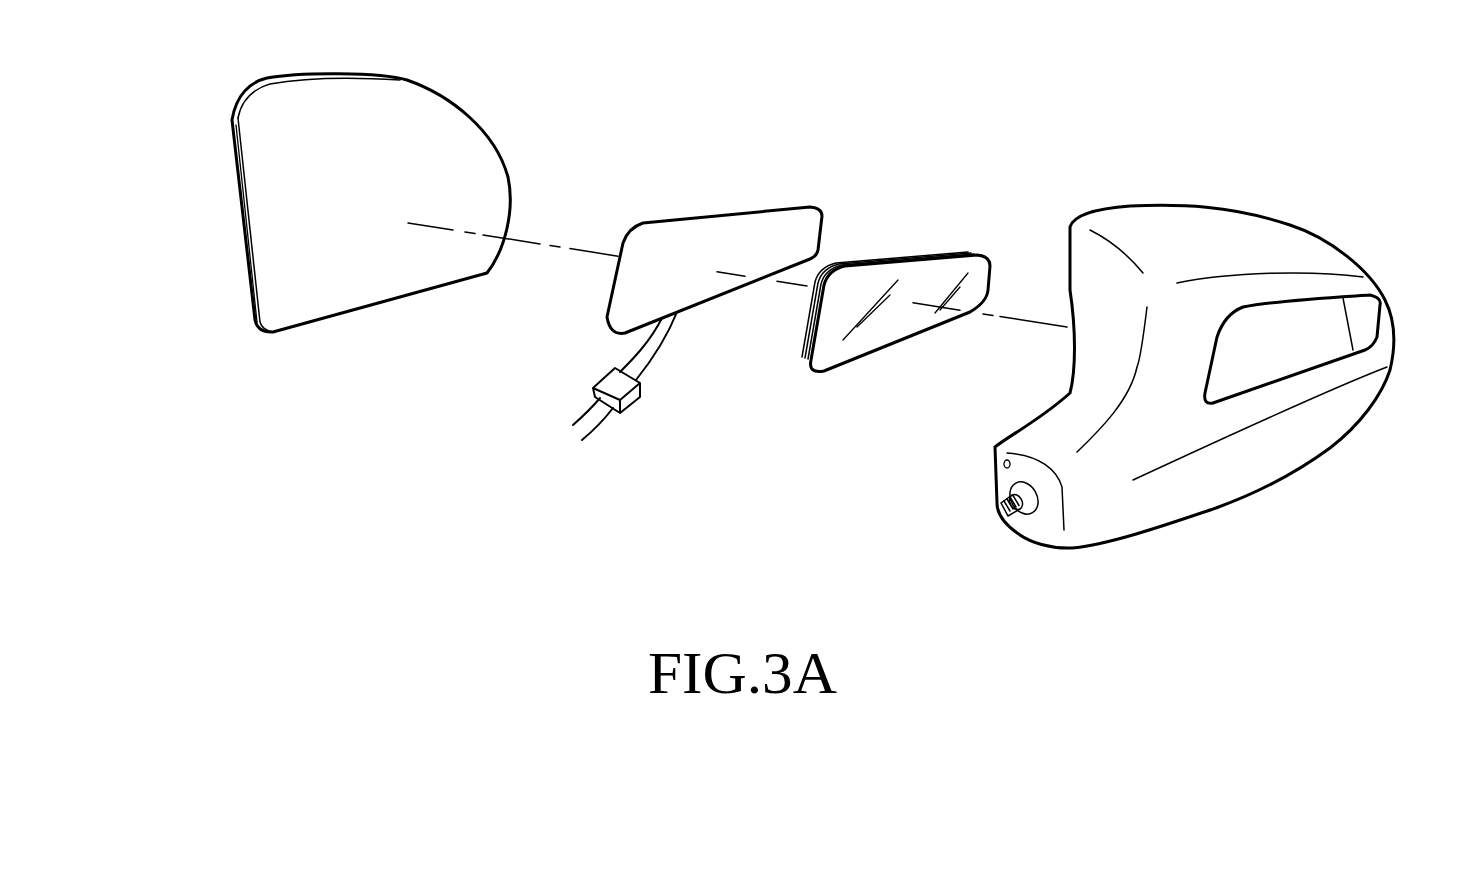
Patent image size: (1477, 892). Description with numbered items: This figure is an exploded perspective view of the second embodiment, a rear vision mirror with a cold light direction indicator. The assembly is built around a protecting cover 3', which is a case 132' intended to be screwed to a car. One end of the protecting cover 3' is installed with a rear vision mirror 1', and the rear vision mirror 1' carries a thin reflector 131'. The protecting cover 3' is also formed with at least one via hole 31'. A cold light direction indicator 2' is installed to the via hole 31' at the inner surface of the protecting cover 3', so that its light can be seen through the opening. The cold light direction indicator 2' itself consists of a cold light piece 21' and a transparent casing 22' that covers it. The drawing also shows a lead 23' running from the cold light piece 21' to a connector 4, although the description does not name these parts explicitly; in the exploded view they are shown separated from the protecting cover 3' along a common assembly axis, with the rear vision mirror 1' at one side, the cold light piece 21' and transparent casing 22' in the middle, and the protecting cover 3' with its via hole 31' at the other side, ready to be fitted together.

The rear vision mirror 1' is at (371, 175).
The thin reflector 131' is at (188, 223).
The cold light direction indicator 2' is at (803, 272).
The cold light piece 21' is at (714, 281).
The transparent casing 22' is at (901, 319).
The cable 23' is at (681, 360).
The connector 4 is at (600, 382).
The protecting cover 3' is at (1194, 340).
The via hole 31' is at (1341, 349).
The case 132' is at (1247, 506).